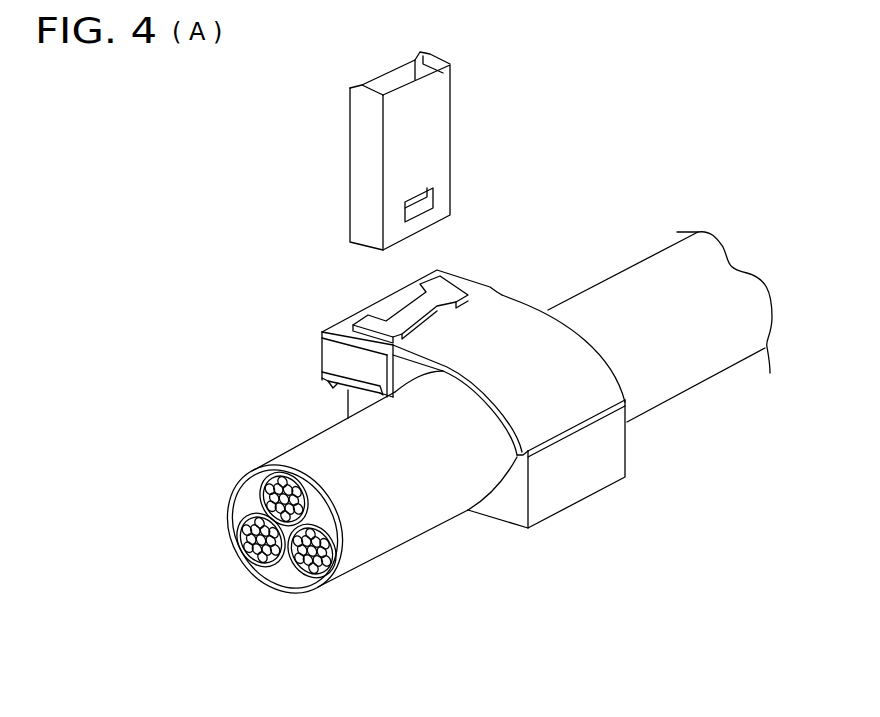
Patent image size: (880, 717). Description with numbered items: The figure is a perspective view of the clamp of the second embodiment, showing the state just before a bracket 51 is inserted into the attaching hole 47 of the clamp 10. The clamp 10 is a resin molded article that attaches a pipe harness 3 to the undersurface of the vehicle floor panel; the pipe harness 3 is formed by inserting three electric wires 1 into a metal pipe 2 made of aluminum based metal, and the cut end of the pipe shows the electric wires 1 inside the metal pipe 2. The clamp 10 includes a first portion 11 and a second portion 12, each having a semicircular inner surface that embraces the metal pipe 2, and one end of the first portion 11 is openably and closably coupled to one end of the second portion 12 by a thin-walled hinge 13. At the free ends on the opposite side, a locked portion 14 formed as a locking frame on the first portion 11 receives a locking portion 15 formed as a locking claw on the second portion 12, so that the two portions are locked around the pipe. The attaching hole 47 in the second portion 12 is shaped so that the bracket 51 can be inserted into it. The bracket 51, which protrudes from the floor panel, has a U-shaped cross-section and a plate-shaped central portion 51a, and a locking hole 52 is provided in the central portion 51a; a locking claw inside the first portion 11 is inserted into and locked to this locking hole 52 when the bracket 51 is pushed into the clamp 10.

The electric wire 1 is at (278, 567).
The metal pipe 2 is at (336, 530).
The pipe harness 3 is at (640, 255).
The clamp 10 is at (509, 380).
The first portion 11 is at (587, 475).
The second portion 12 is at (573, 377).
The thin-walled hinge 13 is at (595, 425).
The locked portion 14 is at (378, 322).
The locking portion 15 is at (335, 388).
The attaching hole 47 is at (437, 285).
The bracket 51 is at (446, 131).
The central portion 51a is at (463, 85).
The locking hole 52 is at (430, 197).